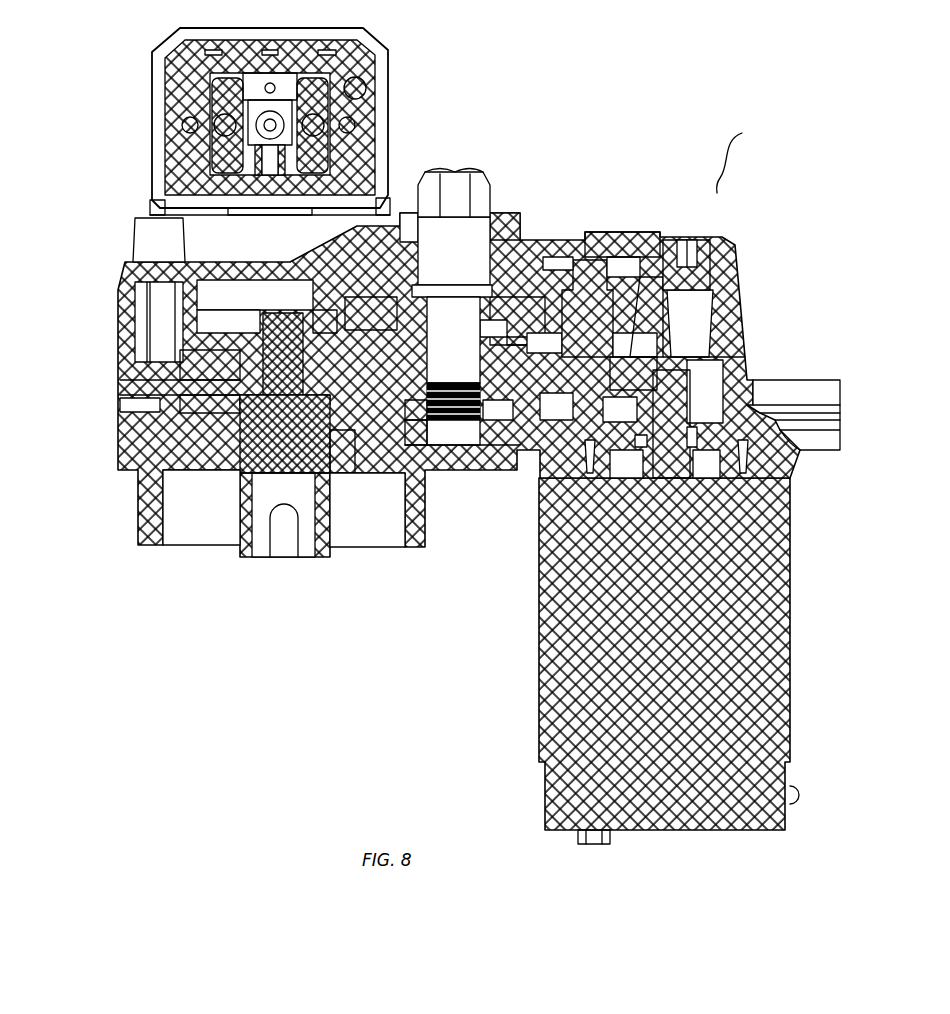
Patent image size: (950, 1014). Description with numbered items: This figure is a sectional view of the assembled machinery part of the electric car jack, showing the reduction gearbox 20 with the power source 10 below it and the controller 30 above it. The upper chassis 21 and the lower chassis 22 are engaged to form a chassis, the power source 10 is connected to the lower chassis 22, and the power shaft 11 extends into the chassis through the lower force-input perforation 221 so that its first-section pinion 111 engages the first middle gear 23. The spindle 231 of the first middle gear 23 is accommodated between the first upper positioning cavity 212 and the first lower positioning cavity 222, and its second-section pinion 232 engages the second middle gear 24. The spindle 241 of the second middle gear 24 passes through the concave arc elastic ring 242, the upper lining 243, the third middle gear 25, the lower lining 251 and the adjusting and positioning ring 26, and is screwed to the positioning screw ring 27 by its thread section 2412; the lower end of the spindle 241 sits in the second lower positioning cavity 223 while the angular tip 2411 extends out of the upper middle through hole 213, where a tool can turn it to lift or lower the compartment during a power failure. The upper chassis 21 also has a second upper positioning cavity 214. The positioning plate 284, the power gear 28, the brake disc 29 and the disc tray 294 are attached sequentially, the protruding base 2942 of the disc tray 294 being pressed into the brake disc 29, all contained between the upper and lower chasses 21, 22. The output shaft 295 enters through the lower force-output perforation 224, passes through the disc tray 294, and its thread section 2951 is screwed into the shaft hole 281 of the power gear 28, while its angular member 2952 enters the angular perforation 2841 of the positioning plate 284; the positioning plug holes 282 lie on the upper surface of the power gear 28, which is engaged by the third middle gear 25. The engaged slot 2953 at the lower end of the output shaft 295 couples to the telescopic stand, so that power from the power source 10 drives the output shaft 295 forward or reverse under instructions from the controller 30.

The power source 10 is at (723, 650).
The power shaft 11 is at (667, 407).
The first-section pinion 111 is at (690, 370).
The reduction gearbox 20 is at (742, 158).
The upper chassis 21 is at (732, 247).
The first upper positioning cavity 212 is at (618, 305).
The upper middle through hole 213 is at (495, 230).
The second upper positioning cavity 214 is at (243, 328).
The lower chassis 22 is at (145, 450).
The lower force-input perforation 221 is at (700, 432).
The first lower positioning cavity 222 is at (556, 405).
The second lower positioning cavity 223 is at (418, 405).
The lower force-output perforation 224 is at (233, 462).
The first middle gear 23 is at (657, 380).
The spindle 231 is at (585, 268).
The second-section pinion 232 is at (638, 372).
The second middle gear 24 is at (503, 307).
The spindle 241 is at (438, 238).
The angular tip 2411 is at (455, 193).
The thread section 2412 is at (455, 413).
The concave arc elastic ring 242 is at (508, 340).
The upper lining 243 is at (518, 350).
The third middle gear 25 is at (487, 412).
The lower lining 251 is at (507, 395).
The adjusting and positioning ring 26 is at (423, 395).
The positioning screw ring 27 is at (430, 410).
The power gear 28 is at (195, 378).
The shaft hole 281 is at (298, 345).
The positioning plug hole 282 is at (235, 350).
The positioning plate 284 is at (213, 338).
The angular perforation 2841 is at (237, 281).
The brake disc 29 is at (350, 403).
The disc tray 294 is at (368, 413).
The protruding base 2942 is at (250, 408).
The output shaft 295 is at (318, 525).
The thread section 2951 is at (211, 283).
The angular member 2952 is at (263, 337).
The engaged slot 2953 is at (282, 523).
The controller 30 is at (363, 46).